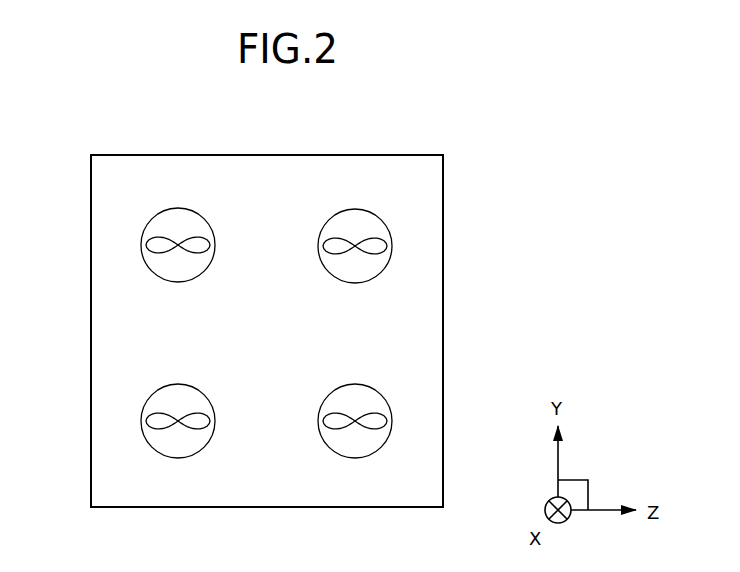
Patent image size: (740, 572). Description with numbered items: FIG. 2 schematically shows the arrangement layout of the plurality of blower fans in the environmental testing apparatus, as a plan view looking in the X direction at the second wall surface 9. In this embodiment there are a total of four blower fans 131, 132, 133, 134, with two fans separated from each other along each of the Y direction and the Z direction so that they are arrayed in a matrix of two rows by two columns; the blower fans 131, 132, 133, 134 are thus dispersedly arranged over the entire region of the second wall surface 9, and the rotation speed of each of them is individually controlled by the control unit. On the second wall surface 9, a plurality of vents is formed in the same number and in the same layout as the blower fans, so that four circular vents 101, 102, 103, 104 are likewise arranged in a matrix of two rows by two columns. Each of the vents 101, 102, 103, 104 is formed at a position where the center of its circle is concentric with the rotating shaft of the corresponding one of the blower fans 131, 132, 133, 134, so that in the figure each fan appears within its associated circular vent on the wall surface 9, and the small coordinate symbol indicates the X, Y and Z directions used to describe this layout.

The second wall surface 9 is at (91, 165).
The vent 101 is at (179, 254).
The vent 102 is at (356, 255).
The vent 103 is at (179, 430).
The vent 104 is at (356, 430).
The blower fan 131 is at (190, 238).
The blower fan 132 is at (367, 239).
The blower fan 133 is at (190, 414).
The blower fan 134 is at (367, 414).